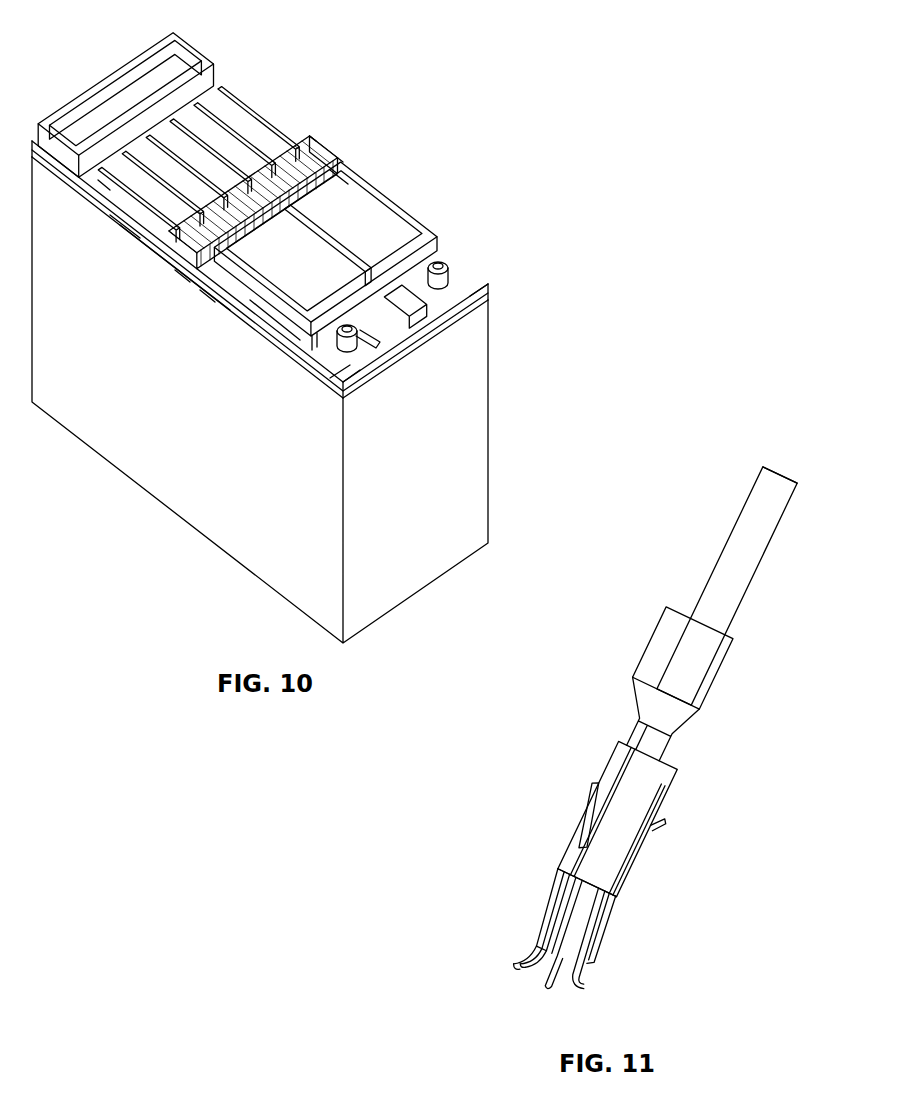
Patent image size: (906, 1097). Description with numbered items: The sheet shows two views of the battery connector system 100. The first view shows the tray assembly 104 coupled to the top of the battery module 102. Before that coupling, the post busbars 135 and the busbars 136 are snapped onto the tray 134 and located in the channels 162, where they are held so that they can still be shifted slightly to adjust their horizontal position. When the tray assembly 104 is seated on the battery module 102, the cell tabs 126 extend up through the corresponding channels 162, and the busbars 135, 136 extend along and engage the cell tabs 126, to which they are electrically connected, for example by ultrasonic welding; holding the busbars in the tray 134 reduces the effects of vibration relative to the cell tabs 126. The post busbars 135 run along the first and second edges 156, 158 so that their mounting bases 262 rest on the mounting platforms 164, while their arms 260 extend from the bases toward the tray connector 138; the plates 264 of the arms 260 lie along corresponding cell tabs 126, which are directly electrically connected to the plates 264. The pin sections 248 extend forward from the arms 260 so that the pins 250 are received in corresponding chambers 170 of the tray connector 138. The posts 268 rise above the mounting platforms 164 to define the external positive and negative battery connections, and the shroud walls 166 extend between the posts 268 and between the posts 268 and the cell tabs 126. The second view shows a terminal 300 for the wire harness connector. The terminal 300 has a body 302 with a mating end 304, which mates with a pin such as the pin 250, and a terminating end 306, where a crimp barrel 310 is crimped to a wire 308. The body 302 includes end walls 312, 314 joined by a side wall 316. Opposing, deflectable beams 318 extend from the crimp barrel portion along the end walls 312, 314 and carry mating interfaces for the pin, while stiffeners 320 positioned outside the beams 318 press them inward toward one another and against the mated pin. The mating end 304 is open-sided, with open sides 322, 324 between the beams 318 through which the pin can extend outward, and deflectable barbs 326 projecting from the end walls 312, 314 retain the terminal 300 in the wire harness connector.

In FIG. 10, the battery connector system 100 is at (385, 76).
In FIG. 10, the battery module 102 is at (217, 492).
In FIG. 10, the tray assembly 104 is at (247, 84).
In FIG. 10, the cell tabs 126 is at (213, 118).
In FIG. 10, the tray 134 is at (122, 223).
In FIG. 10, the post busbars 135 is at (418, 237).
In FIG. 10, the busbars 136 is at (344, 180).
In FIG. 10, the tray connector 138 is at (320, 147).
In FIG. 10, the first edge 156 is at (300, 384).
In FIG. 10, the second edge 158 is at (470, 283).
In FIG. 10, the channels 162 is at (114, 187).
In FIG. 10, the mounting platforms 164 is at (492, 298).
In FIG. 10, the shroud walls 166 is at (450, 263).
In FIG. 10, the chambers 170 is at (312, 148).
In FIG. 10, the pin sections 248 is at (208, 297).
In FIG. 10, the pins 250 is at (182, 276).
In FIG. 10, the arms 260 is at (262, 308).
In FIG. 10, the mounting bases 262 is at (340, 382).
In FIG. 10, the plates 264 is at (283, 368).
In FIG. 10, the posts 268 is at (356, 362).
In FIG. 11, the terminal 300 is at (598, 723).
In FIG. 11, the body 302 is at (648, 795).
In FIG. 11, the mating end 304 is at (540, 989).
In FIG. 11, the terminating end 306 is at (742, 619).
In FIG. 11, the wire 308 is at (768, 523).
In FIG. 11, the crimp barrel 310 is at (703, 680).
In FIG. 11, the end wall 312 is at (612, 770).
In FIG. 11, the end wall 314 is at (670, 797).
In FIG. 11, the side wall 316 is at (625, 842).
In FIG. 11, the beams 318 is at (560, 936).
In FIG. 11, the stiffeners 320 is at (548, 910).
In FIG. 11, the open side 322 is at (542, 960).
In FIG. 11, the open side 324 is at (554, 883).
In FIG. 11, the barbs 326 is at (590, 800).